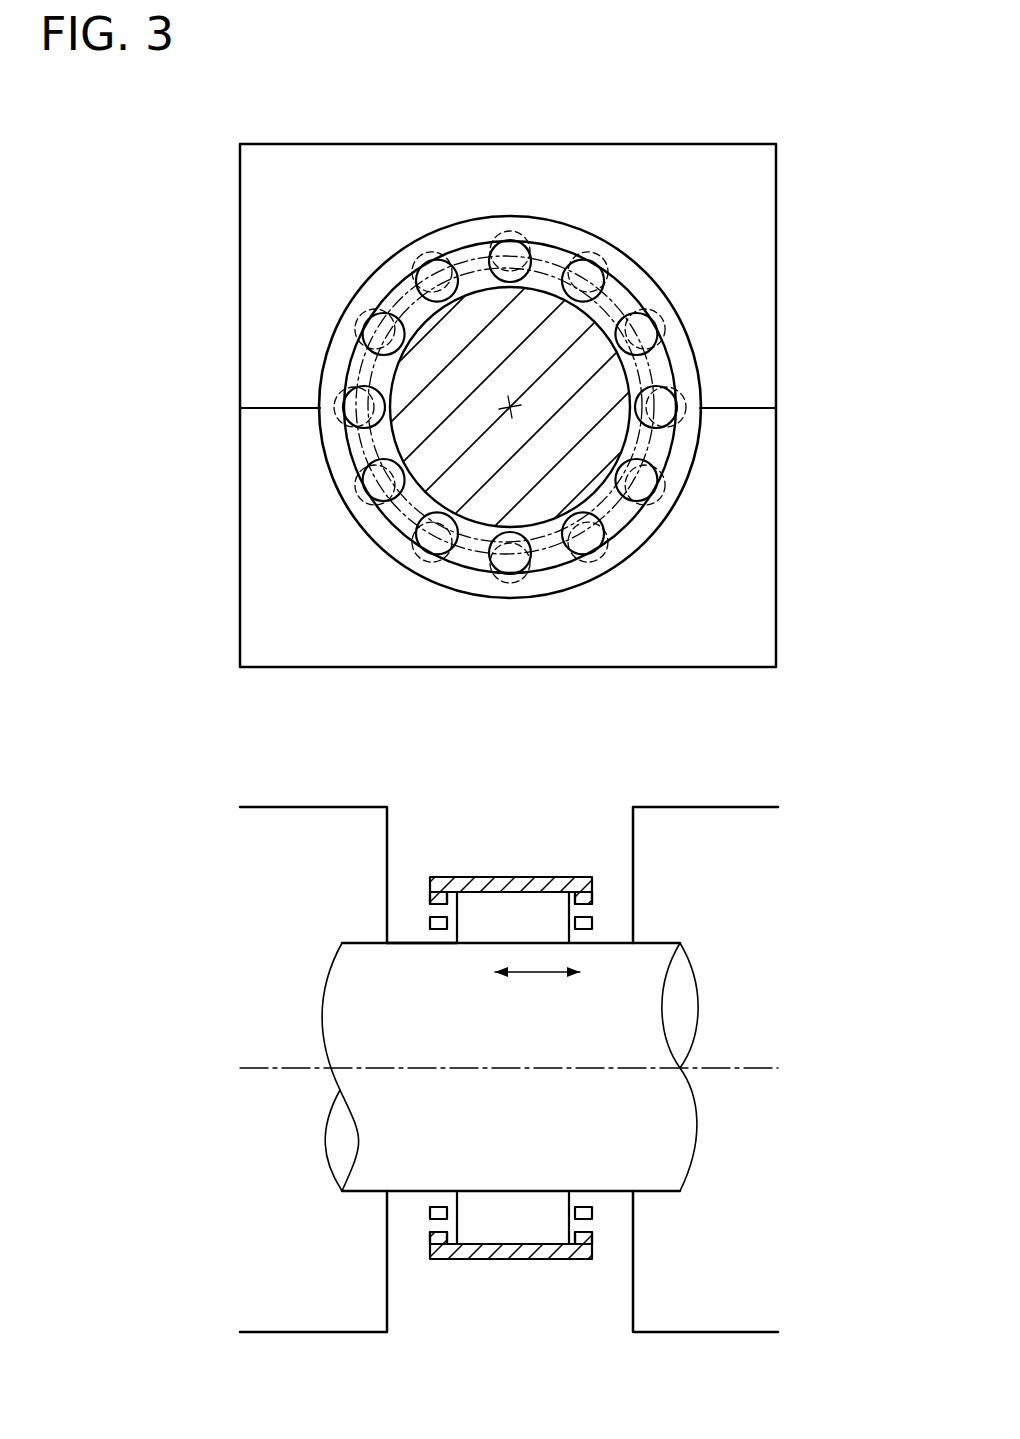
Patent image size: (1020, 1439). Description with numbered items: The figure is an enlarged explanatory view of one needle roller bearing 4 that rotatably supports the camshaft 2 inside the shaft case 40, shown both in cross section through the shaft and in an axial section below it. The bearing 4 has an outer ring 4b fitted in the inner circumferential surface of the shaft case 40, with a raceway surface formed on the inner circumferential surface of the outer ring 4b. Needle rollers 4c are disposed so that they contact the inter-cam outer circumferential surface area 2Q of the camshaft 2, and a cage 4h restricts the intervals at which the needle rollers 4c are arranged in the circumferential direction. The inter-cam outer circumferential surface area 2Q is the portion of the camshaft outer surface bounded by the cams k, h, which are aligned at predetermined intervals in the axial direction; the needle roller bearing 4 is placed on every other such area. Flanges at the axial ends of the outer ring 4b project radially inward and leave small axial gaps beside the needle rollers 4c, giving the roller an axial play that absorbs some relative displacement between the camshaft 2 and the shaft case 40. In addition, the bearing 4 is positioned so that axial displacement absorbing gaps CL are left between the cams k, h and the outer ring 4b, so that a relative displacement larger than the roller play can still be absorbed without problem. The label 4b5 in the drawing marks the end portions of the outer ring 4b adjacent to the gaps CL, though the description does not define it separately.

The shaft case 40 is at (723, 193).
The needle roller bearing 4 is at (690, 262).
The outer ring 4b is at (687, 367).
The needle rollers 4c is at (650, 330).
The cage 4h is at (670, 453).
The camshaft 2 is at (579, 459).
The cam k is at (318, 807).
The cam h is at (706, 807).
The outer ring flange 4b5 is at (430, 887).
The axial displacement absorbing gaps CL is at (407, 869).
The inter-cam outer circumferential surface area 2Q is at (427, 942).